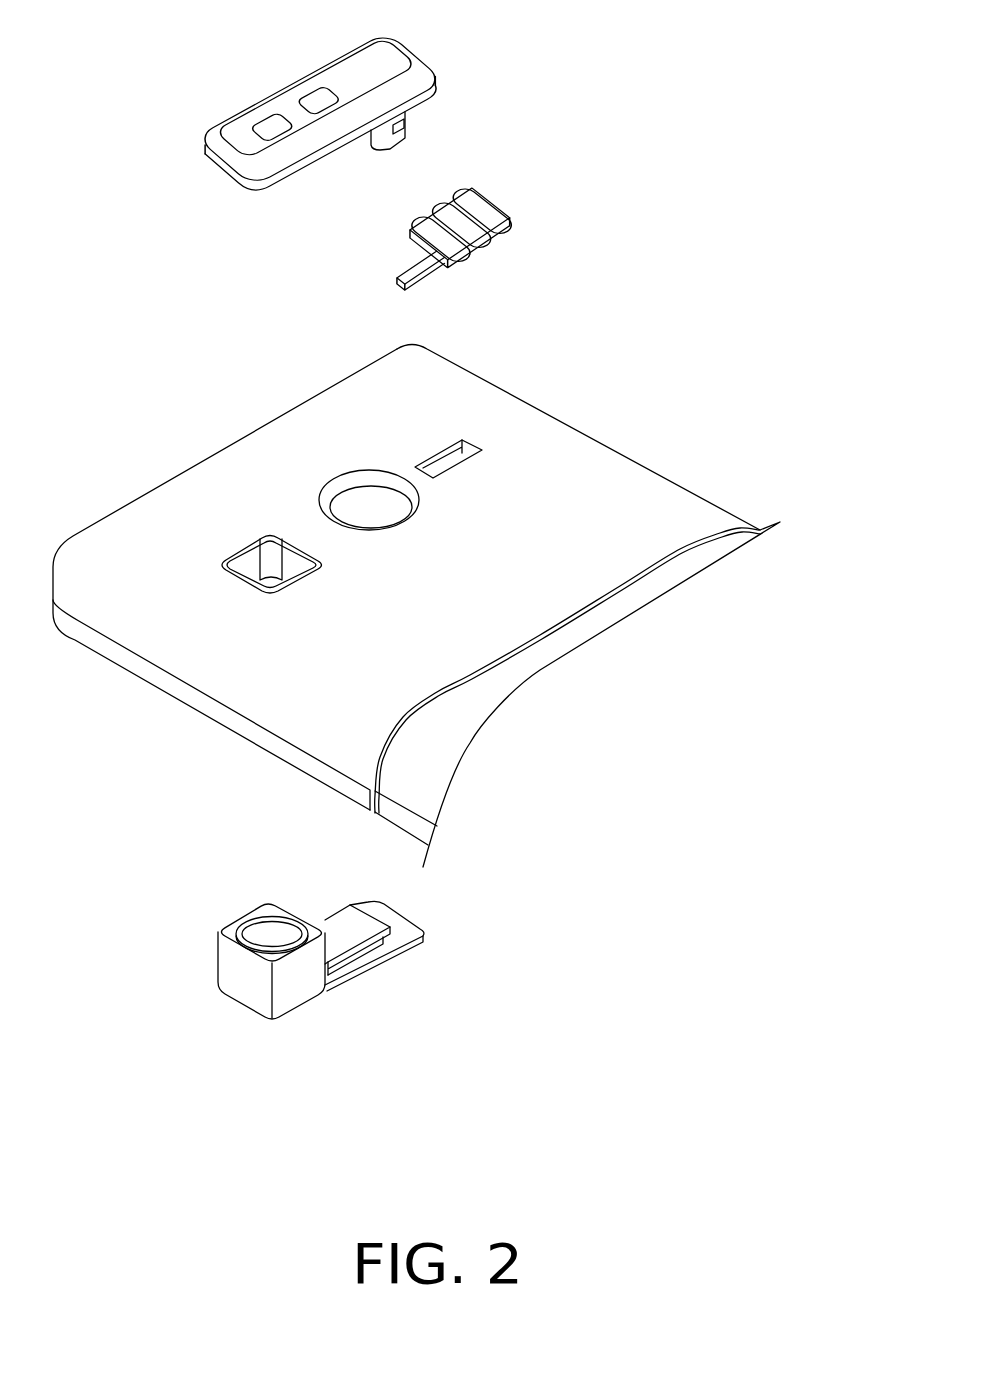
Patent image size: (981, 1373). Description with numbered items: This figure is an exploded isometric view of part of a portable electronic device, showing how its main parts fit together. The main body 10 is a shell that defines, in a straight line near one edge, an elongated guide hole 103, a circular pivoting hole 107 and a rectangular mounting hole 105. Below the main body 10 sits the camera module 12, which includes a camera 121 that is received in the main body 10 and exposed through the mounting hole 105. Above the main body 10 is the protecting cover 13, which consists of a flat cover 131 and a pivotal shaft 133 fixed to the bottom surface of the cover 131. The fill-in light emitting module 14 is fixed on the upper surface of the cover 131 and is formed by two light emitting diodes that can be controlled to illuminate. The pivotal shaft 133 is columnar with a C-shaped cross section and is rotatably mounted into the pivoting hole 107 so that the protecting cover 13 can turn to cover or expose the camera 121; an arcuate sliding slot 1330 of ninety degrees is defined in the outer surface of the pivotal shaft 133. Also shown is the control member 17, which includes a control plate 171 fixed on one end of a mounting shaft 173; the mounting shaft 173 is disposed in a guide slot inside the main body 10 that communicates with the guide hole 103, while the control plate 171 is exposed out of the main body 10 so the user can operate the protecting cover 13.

The main body 10 is at (623, 503).
The guide hole 103 is at (462, 442).
The mounting hole 105 is at (250, 570).
The pivoting hole 107 is at (353, 510).
The camera module 12 is at (260, 923).
The camera 121 is at (277, 930).
The protecting cover 13 is at (197, 128).
The cover 131 is at (425, 76).
The pivotal shaft 133 is at (405, 137).
The arcuate sliding slot 1330 is at (407, 123).
The fill-in light emitting module 14 is at (315, 103).
The control member 17 is at (516, 240).
The control plate 171 is at (473, 207).
The mounting shaft 173 is at (403, 270).